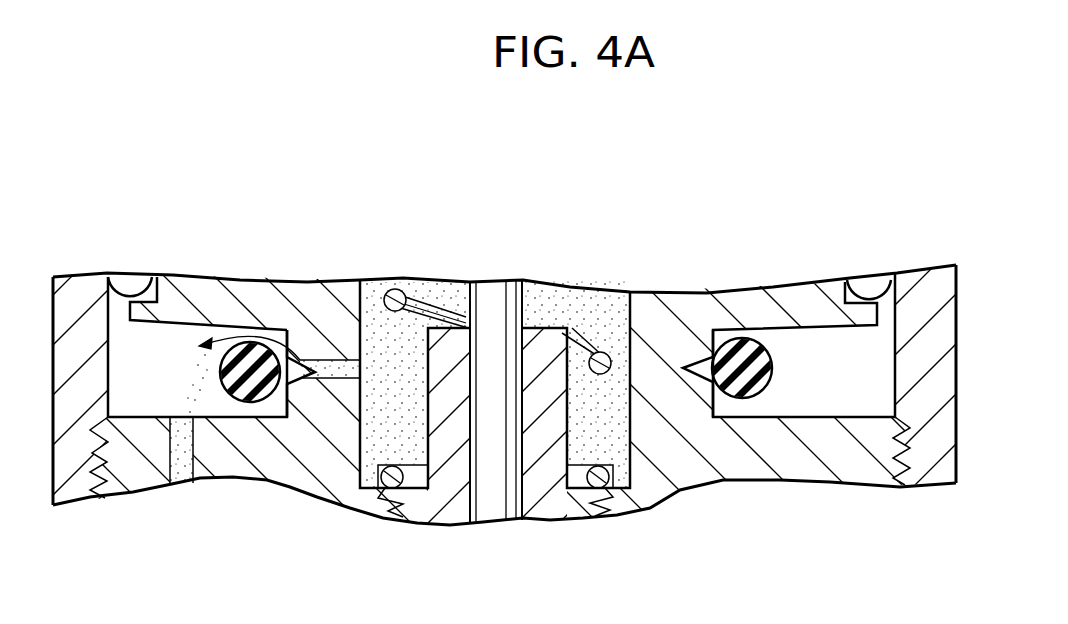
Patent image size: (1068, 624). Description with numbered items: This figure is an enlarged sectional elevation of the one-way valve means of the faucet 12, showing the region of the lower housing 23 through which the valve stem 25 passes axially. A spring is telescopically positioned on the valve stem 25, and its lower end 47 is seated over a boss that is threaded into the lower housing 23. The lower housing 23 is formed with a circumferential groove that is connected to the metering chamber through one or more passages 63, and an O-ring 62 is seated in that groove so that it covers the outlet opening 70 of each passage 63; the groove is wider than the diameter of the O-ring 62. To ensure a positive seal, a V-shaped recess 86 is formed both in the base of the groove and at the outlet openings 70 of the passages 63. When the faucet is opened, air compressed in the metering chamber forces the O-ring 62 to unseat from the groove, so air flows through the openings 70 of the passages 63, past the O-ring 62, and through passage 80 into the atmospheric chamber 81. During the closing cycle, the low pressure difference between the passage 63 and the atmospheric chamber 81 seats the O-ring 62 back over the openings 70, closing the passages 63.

The valve assembly 12 is at (963, 342).
The lower housing 23 is at (855, 468).
The valve stem 25 is at (490, 510).
The lower end of spring 47 is at (604, 352).
The O-ring 62 is at (233, 397).
The passage 63 is at (345, 360).
The outlet opening 70 is at (695, 363).
The passage 80 is at (178, 430).
The atmospheric chamber 81 is at (172, 458).
The V-shaped recess 86 is at (300, 358).